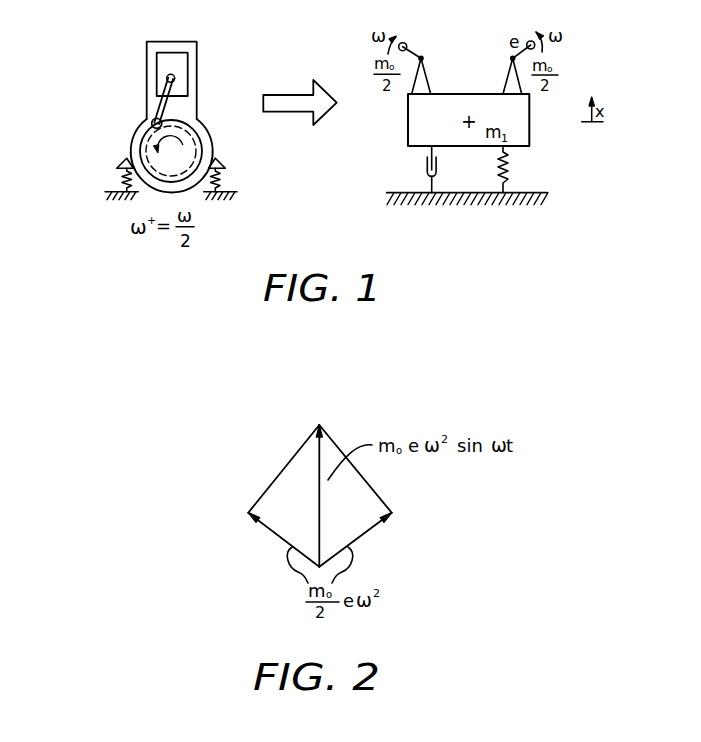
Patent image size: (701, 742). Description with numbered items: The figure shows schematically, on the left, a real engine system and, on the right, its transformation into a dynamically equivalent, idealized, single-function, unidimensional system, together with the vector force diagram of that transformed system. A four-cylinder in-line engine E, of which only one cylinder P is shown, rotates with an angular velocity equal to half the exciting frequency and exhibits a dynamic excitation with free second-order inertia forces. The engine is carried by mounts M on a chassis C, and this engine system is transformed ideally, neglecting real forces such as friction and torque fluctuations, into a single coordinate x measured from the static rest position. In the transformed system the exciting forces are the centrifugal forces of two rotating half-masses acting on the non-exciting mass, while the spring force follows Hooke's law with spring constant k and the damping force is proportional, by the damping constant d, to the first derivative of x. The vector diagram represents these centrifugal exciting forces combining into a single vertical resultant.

The engine E is at (207, 75).
The cylinder P is at (165, 72).
The mounts M is at (108, 177).
The chassis C is at (109, 196).
The damping constant d is at (419, 169).
The spring constant k is at (513, 169).